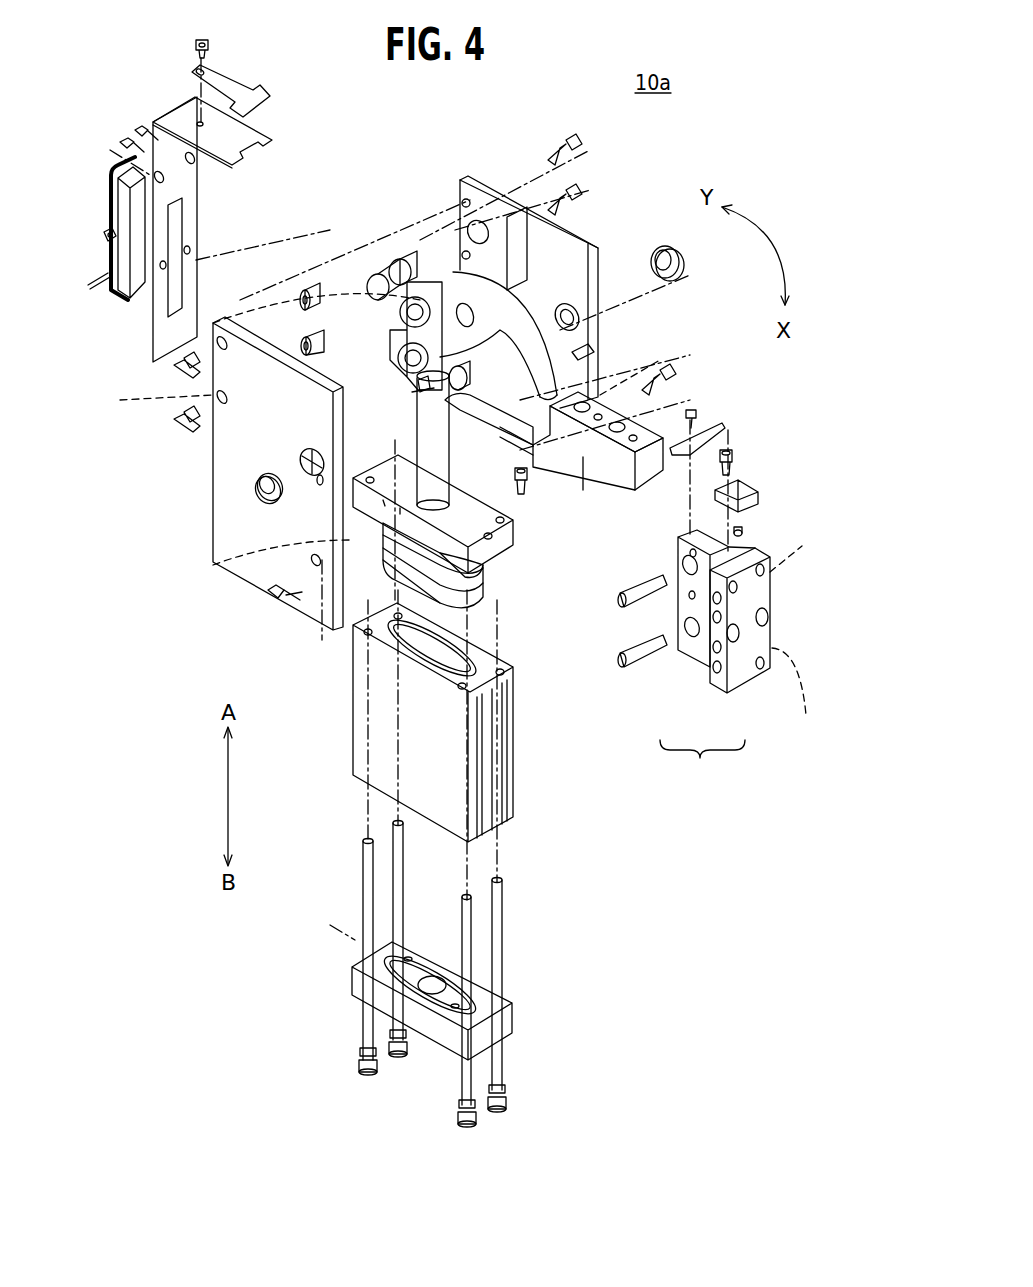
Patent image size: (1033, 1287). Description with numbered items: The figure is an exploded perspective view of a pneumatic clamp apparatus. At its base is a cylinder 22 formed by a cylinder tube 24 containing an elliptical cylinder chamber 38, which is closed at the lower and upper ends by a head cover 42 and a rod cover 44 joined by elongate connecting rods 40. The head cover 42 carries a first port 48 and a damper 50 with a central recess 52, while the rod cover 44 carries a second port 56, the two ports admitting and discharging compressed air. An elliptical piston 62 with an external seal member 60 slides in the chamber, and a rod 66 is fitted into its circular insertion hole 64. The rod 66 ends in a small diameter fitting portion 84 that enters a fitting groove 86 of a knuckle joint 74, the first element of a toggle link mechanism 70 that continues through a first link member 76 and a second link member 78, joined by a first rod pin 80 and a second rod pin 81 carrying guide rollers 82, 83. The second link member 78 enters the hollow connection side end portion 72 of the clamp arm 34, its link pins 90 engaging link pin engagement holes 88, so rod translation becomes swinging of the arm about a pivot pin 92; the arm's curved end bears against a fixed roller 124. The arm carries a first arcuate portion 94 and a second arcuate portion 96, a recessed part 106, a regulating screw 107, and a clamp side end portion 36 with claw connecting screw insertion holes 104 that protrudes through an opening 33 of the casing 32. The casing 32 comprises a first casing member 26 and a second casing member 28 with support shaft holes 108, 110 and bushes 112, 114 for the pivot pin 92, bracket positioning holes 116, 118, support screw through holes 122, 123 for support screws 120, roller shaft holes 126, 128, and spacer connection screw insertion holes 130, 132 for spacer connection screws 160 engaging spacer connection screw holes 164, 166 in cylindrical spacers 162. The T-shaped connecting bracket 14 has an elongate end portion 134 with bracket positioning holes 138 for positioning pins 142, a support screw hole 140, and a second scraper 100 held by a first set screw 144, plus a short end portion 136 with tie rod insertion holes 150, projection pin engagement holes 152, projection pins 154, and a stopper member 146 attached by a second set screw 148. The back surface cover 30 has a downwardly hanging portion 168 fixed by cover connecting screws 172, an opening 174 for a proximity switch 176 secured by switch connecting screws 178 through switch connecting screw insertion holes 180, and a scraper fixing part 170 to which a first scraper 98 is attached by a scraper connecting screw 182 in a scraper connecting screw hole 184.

The connecting bracket 14 is at (702, 760).
The cylinder 22 is at (341, 734).
The cylinder tube 24 is at (505, 766).
The first casing member 26 is at (230, 580).
The second casing member 28 is at (598, 240).
The back surface cover 30 is at (142, 330).
The casing 32 is at (474, 170).
The opening 33 is at (340, 470).
The clamp arm 34 is at (675, 420).
The clamp side end portion 36 is at (640, 482).
The cylinder chamber 38 is at (440, 668).
The connecting rods 40 is at (404, 892).
The head cover 42 is at (510, 1022).
The rod cover 44 is at (515, 562).
The first port 48 is at (355, 962).
The damper 50 is at (490, 980).
The recess 52 is at (432, 975).
The second port 56 is at (400, 420).
The seal member 60 is at (490, 592).
The piston 62 is at (480, 605).
The circular insertion hole 64 is at (515, 537).
The rod 66 is at (455, 455).
The toggle link mechanism 70 is at (348, 418).
The connection side end portion 72 is at (513, 478).
The knuckle joint 74 is at (392, 362).
The first link member 76 is at (430, 338).
The second link member 78 is at (420, 260).
The first rod pin 80 is at (405, 372).
The second rod pin 81 is at (378, 275).
The guide roller 82 is at (575, 330).
The guide roller 83 is at (408, 275).
The small diameter fitting portion 84 is at (420, 390).
The fitting groove 86 is at (422, 395).
The link pin engagement holes 88 is at (470, 310).
The link pins 90 is at (475, 318).
The pivot pin 92 is at (470, 375).
The first arcuate portion 94 is at (580, 330).
The second arcuate portion 96 is at (450, 445).
The first scraper 98 is at (262, 97).
The second scraper 100 is at (725, 437).
The claw connecting screw insertion holes 104 is at (600, 425).
The recessed part 106 is at (535, 400).
The regulating screw 107 is at (525, 494).
The support shaft hole 108 is at (305, 455).
The support shaft hole 110 is at (590, 310).
The bush 112 is at (263, 498).
The bush 114 is at (680, 255).
The bracket positioning hole 116 is at (212, 560).
The bracket positioning hole 118 is at (595, 360).
The support screws 120 is at (276, 600).
The support screw through hole 122 is at (318, 570).
The support screw through hole 123 is at (664, 382).
The fixed roller 124 is at (360, 325).
The roller shaft hole 126 is at (150, 403).
The roller shaft hole 128 is at (480, 225).
The spacer connection screw insertion holes 130 is at (220, 335).
The spacer connection screw insertion holes 132 is at (462, 253).
The elongate end portion 134 is at (700, 655).
The short end portion 136 is at (740, 668).
The bracket positioning holes 138 is at (685, 560).
The support screw hole 140 is at (615, 602).
The positioning pins 142 is at (632, 590).
The first set screw 144 is at (698, 412).
The stopper member 146 is at (760, 497).
The second set screw 148 is at (734, 465).
The tie rod insertion holes 150 is at (722, 598).
The projection pin engagement holes 152 is at (740, 630).
The projection pins 154 is at (797, 630).
The spacer connection screws 160 is at (585, 138).
The spacers 162 is at (306, 285).
The spacer connection screw hole 164 is at (300, 298).
The spacer connection screw hole 166 is at (322, 285).
The downwardly hanging portion 168 is at (190, 190).
The scraper fixing part 170 is at (180, 108).
The cover connecting screws 172 is at (120, 140).
The opening 174 is at (178, 222).
The proximity switch 176 is at (112, 174).
The switch connecting screws 178 is at (118, 242).
The switch connecting screw insertion holes 180 is at (108, 233).
The scraper connecting screw 182 is at (208, 40).
The scraper connecting screw hole 184 is at (202, 122).